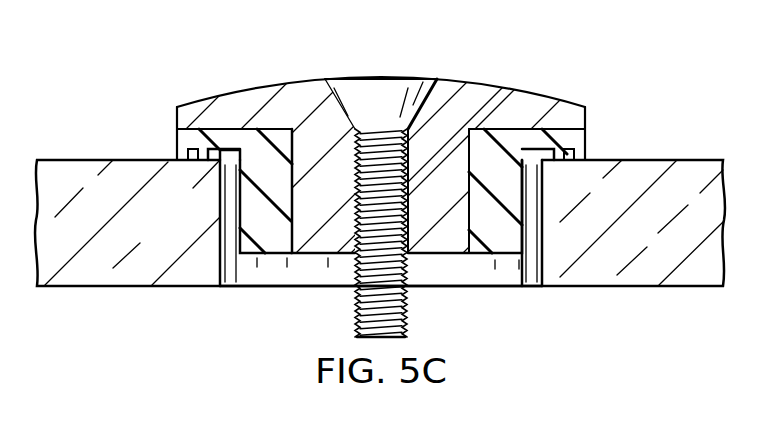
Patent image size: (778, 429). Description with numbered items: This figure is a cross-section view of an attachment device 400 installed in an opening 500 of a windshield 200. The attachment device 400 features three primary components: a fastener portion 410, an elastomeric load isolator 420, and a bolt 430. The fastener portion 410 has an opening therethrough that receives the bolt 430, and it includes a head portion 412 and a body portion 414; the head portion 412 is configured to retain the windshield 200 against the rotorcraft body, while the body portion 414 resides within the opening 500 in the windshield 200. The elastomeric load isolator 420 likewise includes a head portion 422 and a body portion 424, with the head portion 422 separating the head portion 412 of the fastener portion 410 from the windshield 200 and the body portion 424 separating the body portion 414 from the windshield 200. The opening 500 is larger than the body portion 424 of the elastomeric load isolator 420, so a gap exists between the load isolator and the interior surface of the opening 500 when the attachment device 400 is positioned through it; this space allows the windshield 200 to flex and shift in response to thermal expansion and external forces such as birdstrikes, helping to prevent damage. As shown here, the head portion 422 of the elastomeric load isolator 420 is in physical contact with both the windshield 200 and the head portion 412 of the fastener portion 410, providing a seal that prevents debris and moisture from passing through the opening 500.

The windshield 200 is at (137, 277).
The attachment device 400 is at (453, 66).
The fastener portion 410 is at (251, 89).
The head portion 412 is at (587, 115).
The body portion 414 is at (313, 247).
The elastomeric load isolator 420 is at (241, 203).
The head portion 422 is at (186, 135).
The body portion 424 is at (507, 245).
The bolt 430 is at (382, 78).
The opening 500 is at (233, 272).